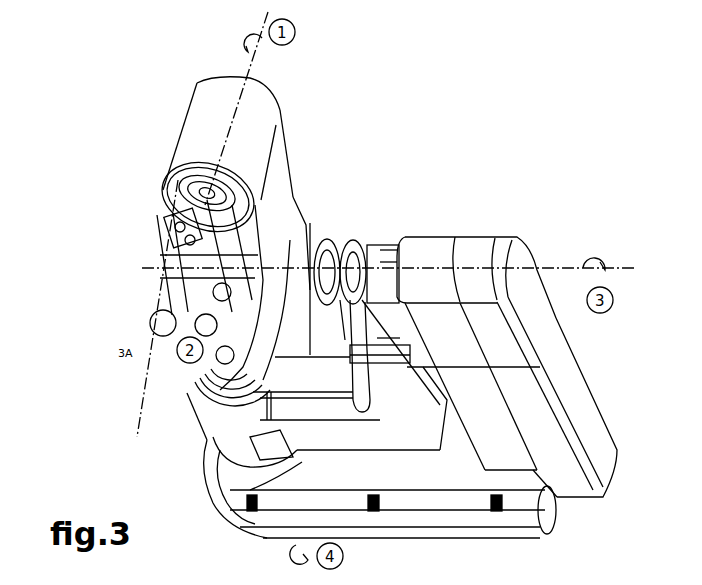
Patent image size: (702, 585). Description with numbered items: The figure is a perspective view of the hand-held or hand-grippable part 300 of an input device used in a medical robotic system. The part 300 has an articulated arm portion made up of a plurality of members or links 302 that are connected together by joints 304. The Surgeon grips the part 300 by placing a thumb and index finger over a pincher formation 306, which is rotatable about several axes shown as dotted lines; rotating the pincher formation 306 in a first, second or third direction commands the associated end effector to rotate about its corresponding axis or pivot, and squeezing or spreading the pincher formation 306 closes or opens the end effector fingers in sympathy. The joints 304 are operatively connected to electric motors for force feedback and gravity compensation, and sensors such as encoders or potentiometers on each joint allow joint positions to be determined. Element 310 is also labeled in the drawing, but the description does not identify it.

The hand-grippable part 300 is at (476, 172).
The links 302 is at (417, 233).
The joints 304 is at (262, 132).
The pincher formation 306 is at (145, 265).
The fasteners 310 is at (172, 230).